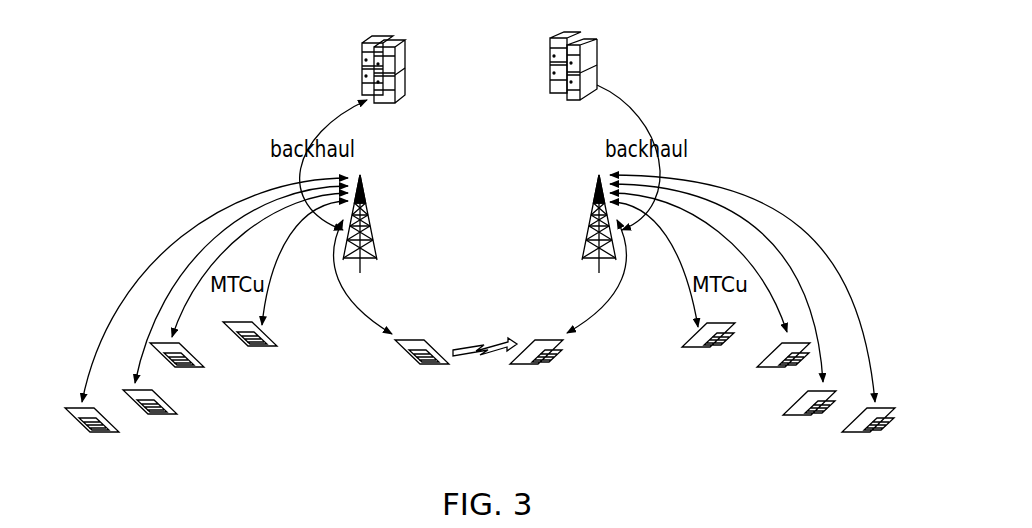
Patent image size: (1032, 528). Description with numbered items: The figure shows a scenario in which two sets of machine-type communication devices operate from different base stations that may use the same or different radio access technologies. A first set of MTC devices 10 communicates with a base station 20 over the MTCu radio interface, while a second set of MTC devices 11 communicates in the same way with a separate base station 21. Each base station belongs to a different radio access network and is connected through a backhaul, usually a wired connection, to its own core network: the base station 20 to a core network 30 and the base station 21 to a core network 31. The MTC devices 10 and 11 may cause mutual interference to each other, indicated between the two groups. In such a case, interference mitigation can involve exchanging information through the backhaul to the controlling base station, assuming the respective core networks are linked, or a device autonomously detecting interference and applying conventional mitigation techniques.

The MTC devices 10 is at (162, 425).
The MTC devices 11 is at (797, 423).
The base station 20 is at (372, 230).
The base station 21 is at (588, 232).
The core network 30 is at (447, 127).
The core network 31 is at (515, 127).